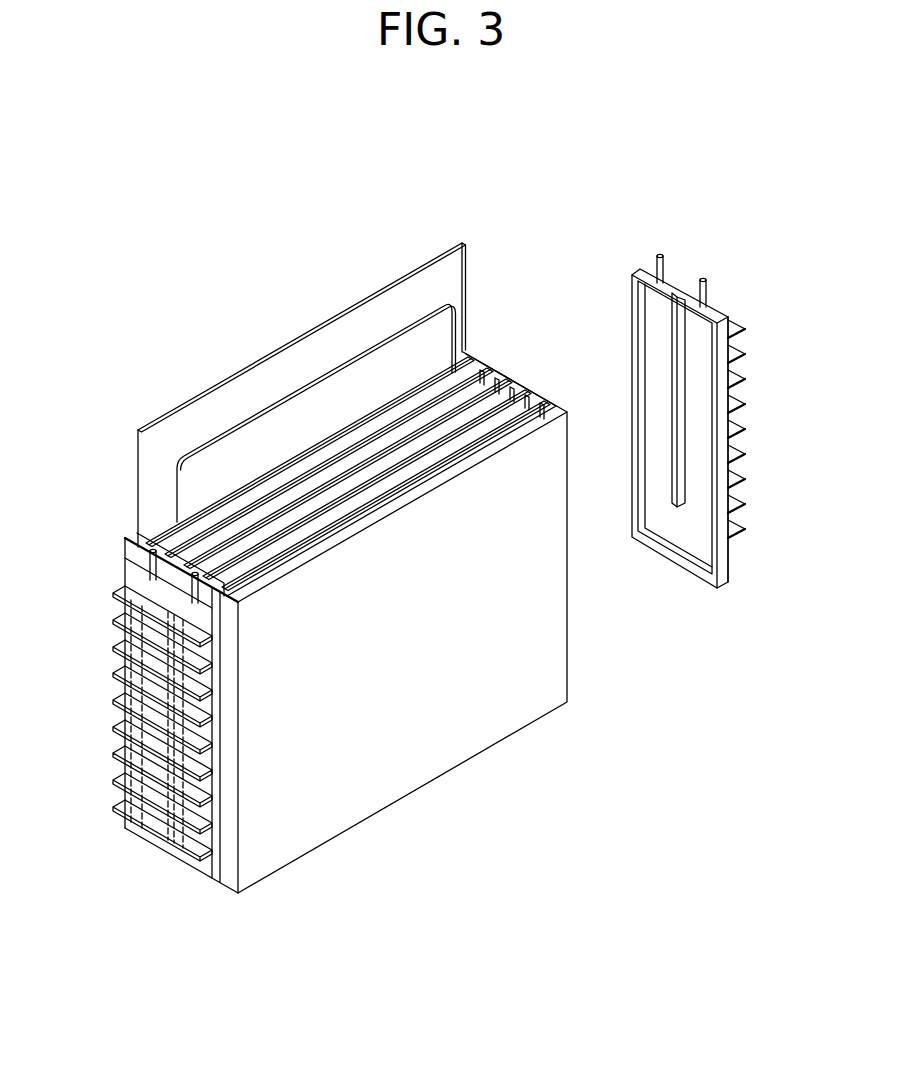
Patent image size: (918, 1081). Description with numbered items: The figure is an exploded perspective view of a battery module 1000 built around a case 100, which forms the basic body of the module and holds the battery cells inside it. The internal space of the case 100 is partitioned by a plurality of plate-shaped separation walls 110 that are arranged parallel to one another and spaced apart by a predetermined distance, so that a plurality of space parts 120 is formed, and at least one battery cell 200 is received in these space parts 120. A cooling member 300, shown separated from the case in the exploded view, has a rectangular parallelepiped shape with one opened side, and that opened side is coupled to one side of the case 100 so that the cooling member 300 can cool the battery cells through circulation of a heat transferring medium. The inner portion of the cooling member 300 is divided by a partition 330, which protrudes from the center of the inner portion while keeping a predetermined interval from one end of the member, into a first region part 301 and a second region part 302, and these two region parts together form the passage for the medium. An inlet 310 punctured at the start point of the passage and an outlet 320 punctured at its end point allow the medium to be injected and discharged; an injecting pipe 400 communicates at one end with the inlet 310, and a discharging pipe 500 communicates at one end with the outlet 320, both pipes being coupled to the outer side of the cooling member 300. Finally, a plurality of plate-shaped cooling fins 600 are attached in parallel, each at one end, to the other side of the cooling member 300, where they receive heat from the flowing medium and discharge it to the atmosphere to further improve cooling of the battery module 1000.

The battery module 1000 is at (230, 296).
The case 100 is at (572, 600).
The separation walls 110 is at (452, 425).
The space parts 120 is at (490, 437).
The battery cell 200 is at (229, 373).
The cooling member 300 is at (124, 559).
The first region part 301 is at (651, 421).
The second region part 302 is at (700, 424).
The inlet 310 is at (645, 289).
The outlet 320 is at (685, 312).
The partition 330 is at (727, 382).
The injecting pipe 400 is at (660, 254).
The discharging pipe 500 is at (703, 279).
The cooling fin 600 is at (114, 615).